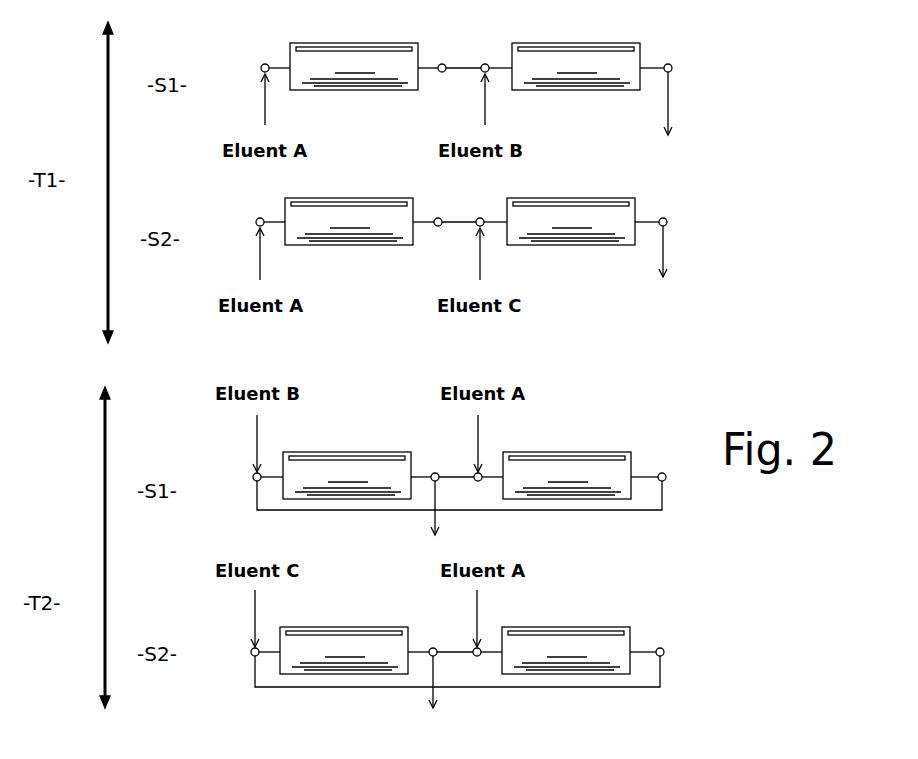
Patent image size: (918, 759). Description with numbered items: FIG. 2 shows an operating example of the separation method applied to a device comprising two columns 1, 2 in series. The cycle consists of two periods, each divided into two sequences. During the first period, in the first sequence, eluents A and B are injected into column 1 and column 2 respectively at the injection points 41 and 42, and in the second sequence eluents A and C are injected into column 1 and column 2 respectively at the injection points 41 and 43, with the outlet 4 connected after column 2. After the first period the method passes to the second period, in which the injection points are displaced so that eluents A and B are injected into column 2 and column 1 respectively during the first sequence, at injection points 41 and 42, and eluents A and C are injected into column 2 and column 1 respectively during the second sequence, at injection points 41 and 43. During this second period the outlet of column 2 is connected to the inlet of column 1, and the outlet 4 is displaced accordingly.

The column 1 is at (323, 60).
The column 2 is at (542, 58).
The outlet 4 is at (668, 108).
The injection point 41 is at (264, 120).
The injection point 42 is at (485, 108).
The injection point 43 is at (480, 263).